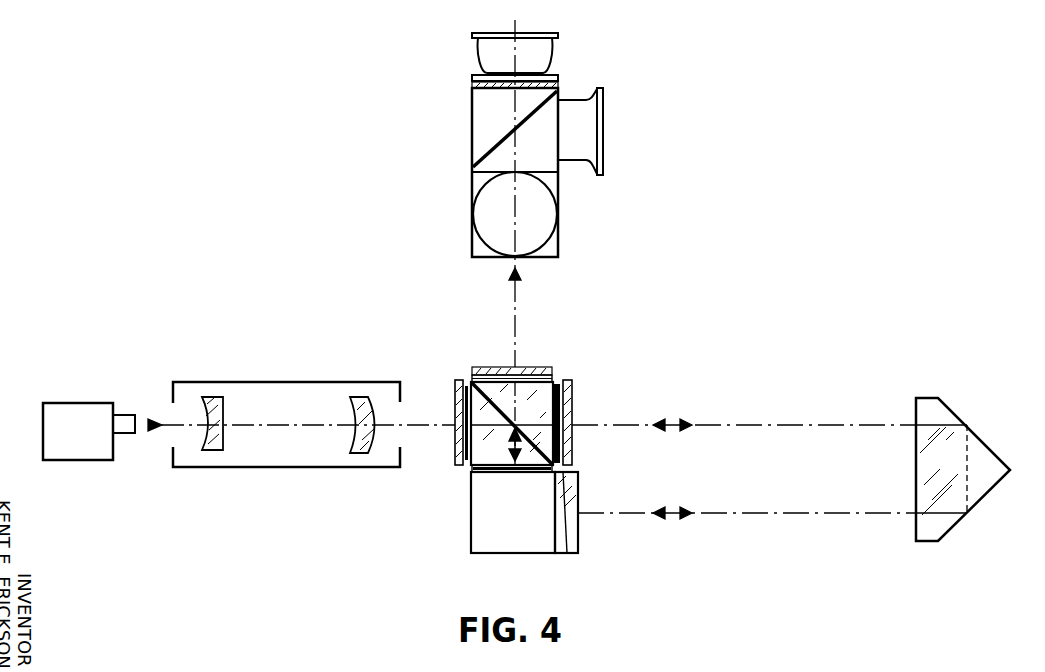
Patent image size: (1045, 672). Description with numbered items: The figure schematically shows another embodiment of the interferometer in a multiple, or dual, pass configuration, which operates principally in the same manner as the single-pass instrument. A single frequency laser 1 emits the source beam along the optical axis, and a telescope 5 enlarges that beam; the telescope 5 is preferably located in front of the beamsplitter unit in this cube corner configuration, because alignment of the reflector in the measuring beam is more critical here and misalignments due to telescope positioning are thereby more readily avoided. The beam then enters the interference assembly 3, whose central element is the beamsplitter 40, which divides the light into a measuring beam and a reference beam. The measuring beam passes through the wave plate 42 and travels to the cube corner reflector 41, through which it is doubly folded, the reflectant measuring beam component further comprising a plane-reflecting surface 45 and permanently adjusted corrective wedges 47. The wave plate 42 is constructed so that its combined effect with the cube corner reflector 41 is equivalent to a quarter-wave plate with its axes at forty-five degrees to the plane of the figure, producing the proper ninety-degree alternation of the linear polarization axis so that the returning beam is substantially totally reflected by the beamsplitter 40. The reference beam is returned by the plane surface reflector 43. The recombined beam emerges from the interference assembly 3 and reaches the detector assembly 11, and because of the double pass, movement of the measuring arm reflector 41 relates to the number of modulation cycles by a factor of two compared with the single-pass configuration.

The single frequency laser 1 is at (73, 403).
The telescope 5 is at (238, 382).
The detector assembly 11 is at (472, 133).
The beamsplitter 40 is at (509, 395).
The wave plate 42 is at (558, 386).
The interference assembly 3 is at (468, 466).
The plane surface reflector 43 is at (477, 474).
The plane-reflecting surface 45 is at (565, 555).
The corrective wedges 47 is at (580, 528).
The cube corner reflector 41 is at (958, 420).